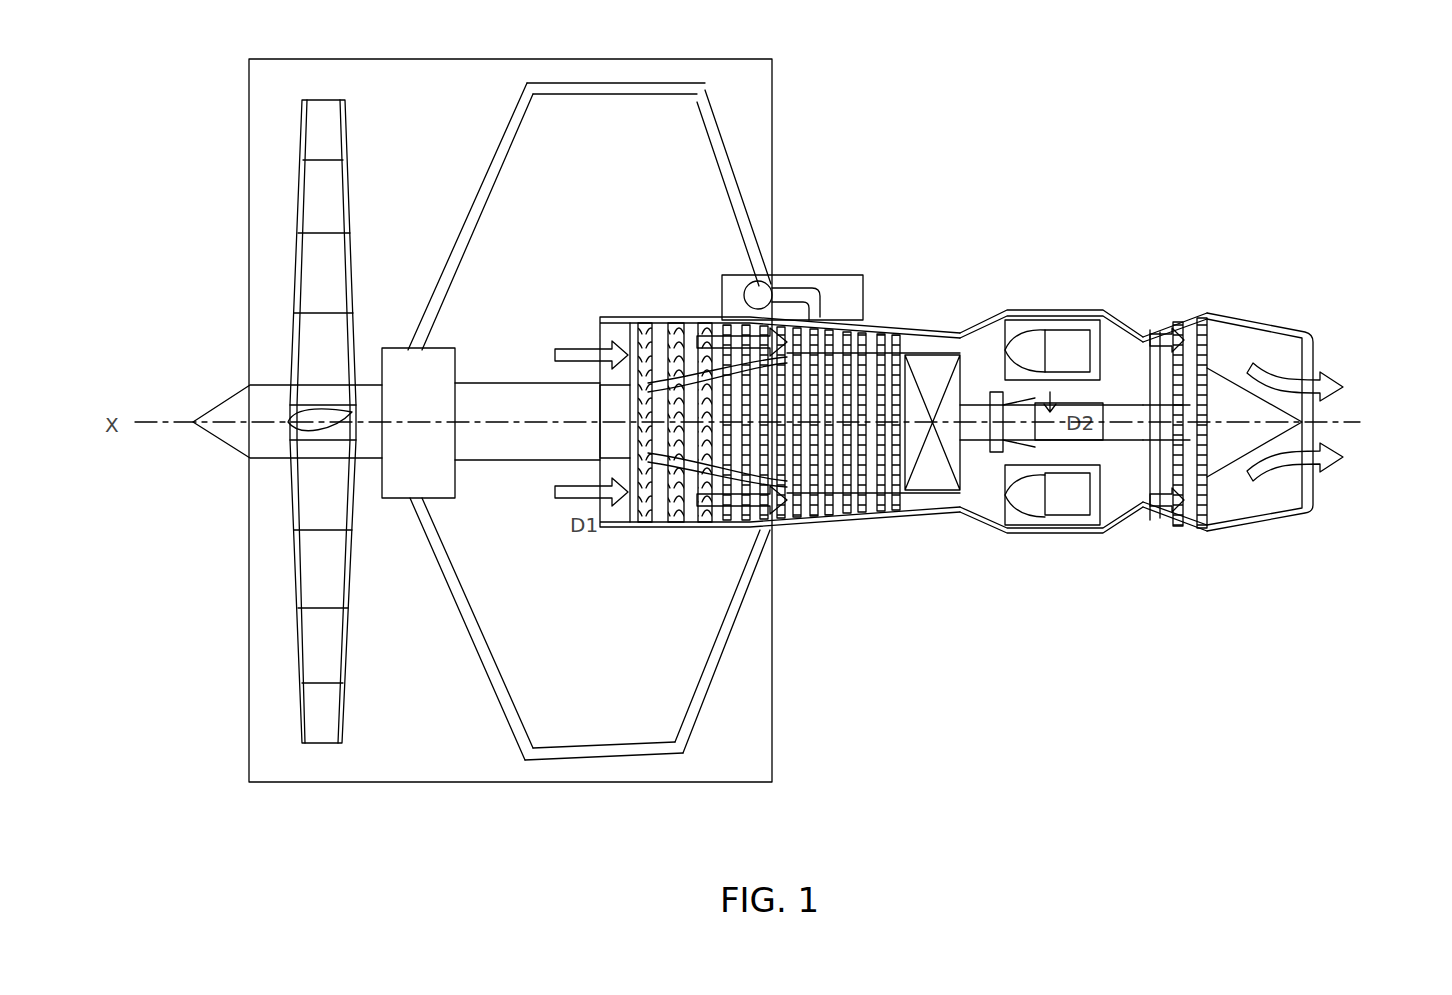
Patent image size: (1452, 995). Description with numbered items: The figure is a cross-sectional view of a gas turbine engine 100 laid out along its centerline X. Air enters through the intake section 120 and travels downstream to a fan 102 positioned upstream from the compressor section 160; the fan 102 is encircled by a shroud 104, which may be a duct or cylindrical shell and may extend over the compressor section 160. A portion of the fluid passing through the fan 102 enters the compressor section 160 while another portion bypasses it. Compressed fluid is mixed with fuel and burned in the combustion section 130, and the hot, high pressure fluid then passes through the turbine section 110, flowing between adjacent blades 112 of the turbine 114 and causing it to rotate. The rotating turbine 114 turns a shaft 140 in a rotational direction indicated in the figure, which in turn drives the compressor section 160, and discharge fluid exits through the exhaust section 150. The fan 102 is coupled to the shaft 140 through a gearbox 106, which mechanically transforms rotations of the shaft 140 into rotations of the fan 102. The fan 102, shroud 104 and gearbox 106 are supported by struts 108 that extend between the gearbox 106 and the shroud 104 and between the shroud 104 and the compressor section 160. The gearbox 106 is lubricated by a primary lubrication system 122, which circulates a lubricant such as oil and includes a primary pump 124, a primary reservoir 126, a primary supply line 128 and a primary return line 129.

The gas turbine engine 100 is at (1072, 148).
The fan 102 is at (323, 100).
The shroud 104 is at (426, 59).
The gearbox 106 is at (432, 347).
The struts 108 is at (574, 425).
The turbine section 110 is at (1228, 445).
The blades 112 is at (1203, 318).
The turbine 114 is at (1219, 497).
The intake section 120 is at (188, 232).
The primary lubrication system 122 is at (832, 266).
The primary pump 124 is at (761, 290).
The primary reservoir 126 is at (845, 287).
The primary supply line 128 is at (590, 90).
The primary return line 129 is at (592, 756).
The combustion section 130 is at (1051, 550).
The shaft 140 is at (500, 383).
The exhaust section 150 is at (1366, 372).
The compressor section 160 is at (809, 548).